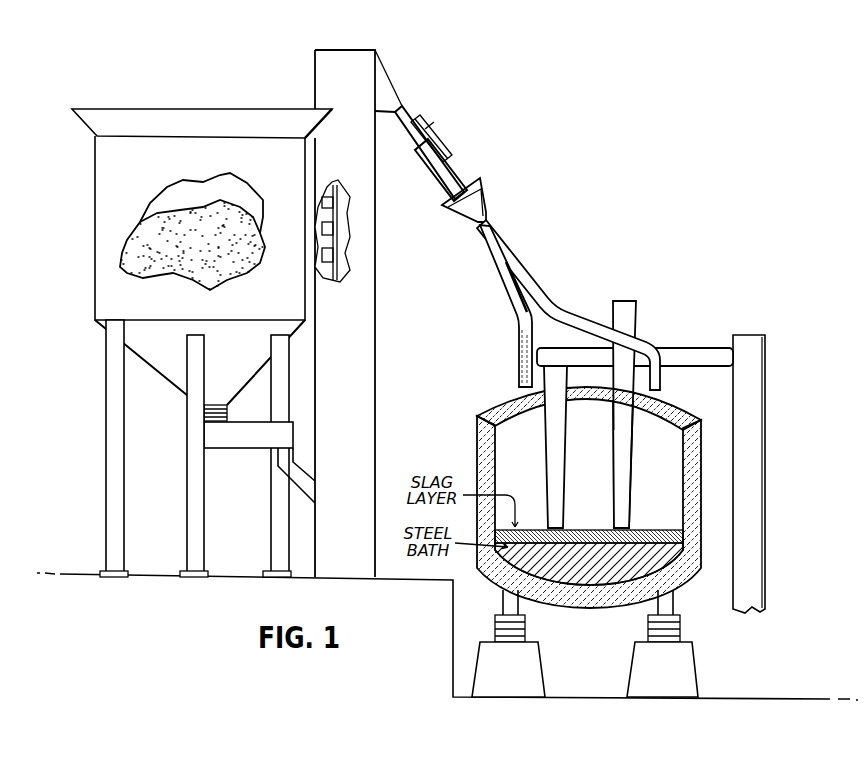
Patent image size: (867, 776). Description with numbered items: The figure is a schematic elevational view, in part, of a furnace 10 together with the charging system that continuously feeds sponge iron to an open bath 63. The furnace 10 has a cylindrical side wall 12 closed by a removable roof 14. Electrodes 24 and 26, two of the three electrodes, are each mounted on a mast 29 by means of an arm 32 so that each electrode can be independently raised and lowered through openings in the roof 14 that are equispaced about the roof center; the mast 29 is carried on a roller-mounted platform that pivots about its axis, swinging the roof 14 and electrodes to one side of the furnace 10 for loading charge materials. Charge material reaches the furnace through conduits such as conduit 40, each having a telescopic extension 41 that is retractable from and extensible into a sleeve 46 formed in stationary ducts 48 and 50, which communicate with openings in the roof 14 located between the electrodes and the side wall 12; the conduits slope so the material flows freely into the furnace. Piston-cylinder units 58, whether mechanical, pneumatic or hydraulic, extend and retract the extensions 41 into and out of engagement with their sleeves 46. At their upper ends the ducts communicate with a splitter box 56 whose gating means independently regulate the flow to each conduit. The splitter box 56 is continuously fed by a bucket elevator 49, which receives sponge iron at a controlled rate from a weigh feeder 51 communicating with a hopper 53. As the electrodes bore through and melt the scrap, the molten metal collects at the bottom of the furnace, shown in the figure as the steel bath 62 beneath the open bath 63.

The furnace 10 is at (470, 412).
The cylindrical side wall 12 is at (487, 453).
The removable roof 14 is at (496, 391).
The electrode 24 is at (555, 467).
The electrode 26 is at (625, 466).
The mast 29 is at (750, 480).
The arm 32 is at (688, 357).
The conduit 40 is at (404, 113).
The telescopic extension 41 is at (452, 173).
The sleeve 46 is at (485, 196).
The stationary duct 48 is at (508, 287).
The bucket elevator 49 is at (355, 220).
The stationary duct 50 is at (530, 273).
The weigh feeder 51 is at (253, 442).
The hopper 53 is at (105, 216).
The splitter box 56 is at (393, 85).
The piston-cylinder unit 58 is at (445, 140).
The steel bath 62 is at (600, 585).
The open bath 63 is at (643, 533).